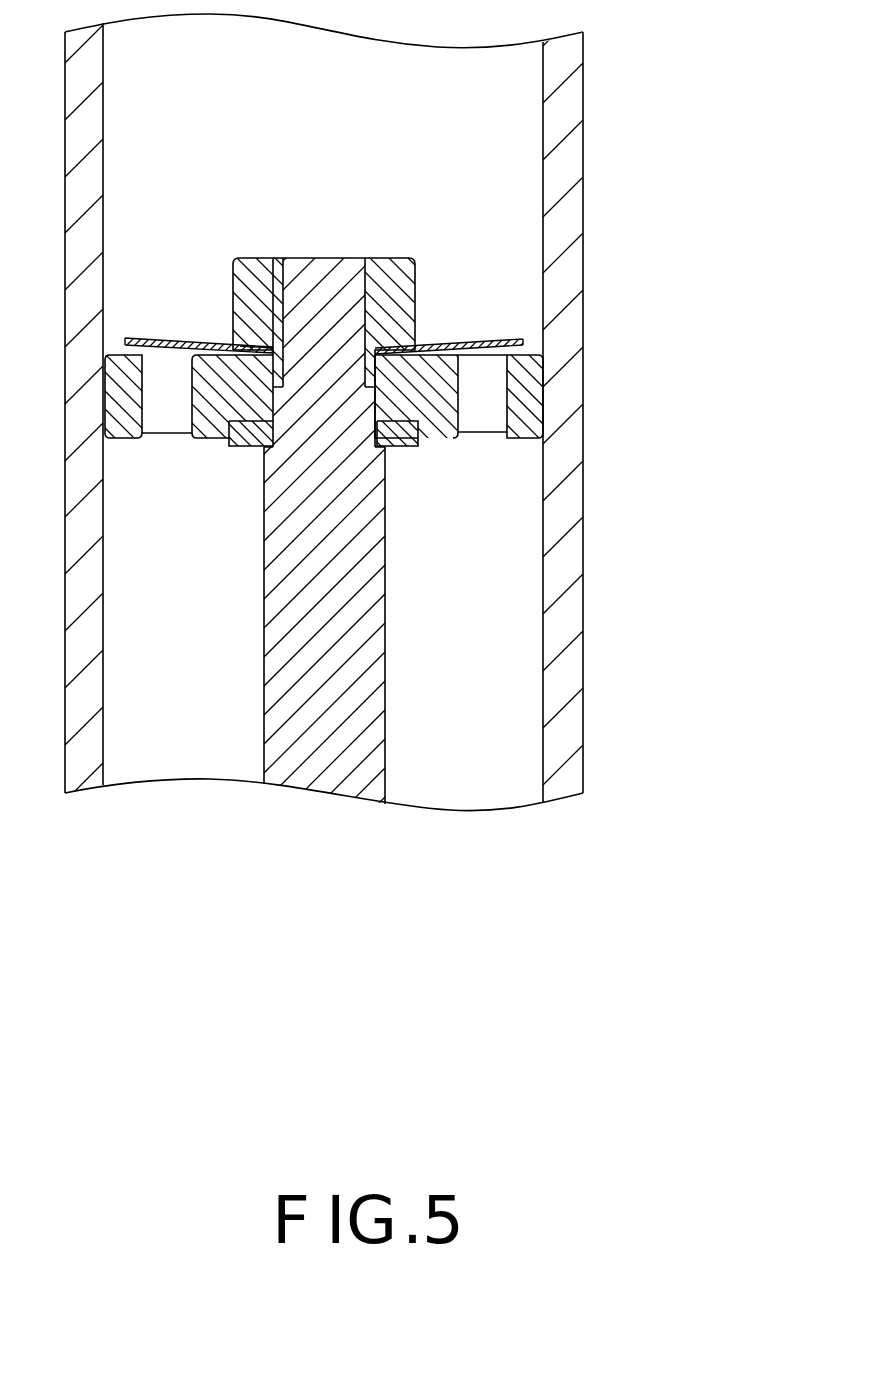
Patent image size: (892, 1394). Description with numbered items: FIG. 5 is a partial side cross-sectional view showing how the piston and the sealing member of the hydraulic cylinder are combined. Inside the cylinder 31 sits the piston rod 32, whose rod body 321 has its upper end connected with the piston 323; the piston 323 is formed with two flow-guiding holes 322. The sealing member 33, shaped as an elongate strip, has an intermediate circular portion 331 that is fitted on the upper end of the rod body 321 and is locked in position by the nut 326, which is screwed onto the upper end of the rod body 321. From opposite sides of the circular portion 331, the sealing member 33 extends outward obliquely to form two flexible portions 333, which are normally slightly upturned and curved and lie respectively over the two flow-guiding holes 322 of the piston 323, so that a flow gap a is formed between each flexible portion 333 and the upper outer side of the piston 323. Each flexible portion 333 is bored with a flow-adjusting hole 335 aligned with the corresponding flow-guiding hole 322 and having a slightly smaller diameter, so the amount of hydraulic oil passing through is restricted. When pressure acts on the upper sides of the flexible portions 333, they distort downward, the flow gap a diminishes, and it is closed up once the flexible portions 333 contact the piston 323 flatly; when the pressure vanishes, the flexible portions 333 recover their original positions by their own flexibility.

The cylinder 31 is at (583, 540).
The piston rod 32 is at (446, 521).
The rod body 321 is at (327, 688).
The flow-guiding holes 322 is at (482, 400).
The piston 323 is at (432, 442).
The nut 326 is at (416, 275).
The sealing member 33 is at (407, 258).
The circular portion 331 is at (258, 352).
The flexible portion 333 is at (512, 338).
The flow-adjusting hole 335 is at (473, 343).
The flow gap a is at (532, 348).